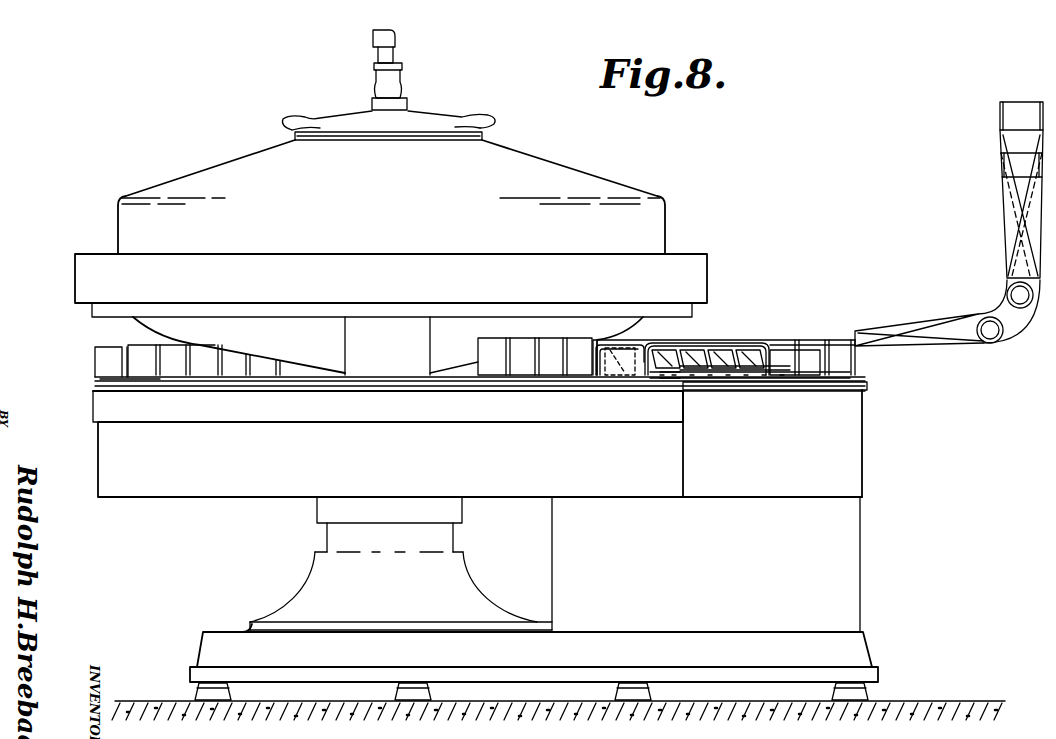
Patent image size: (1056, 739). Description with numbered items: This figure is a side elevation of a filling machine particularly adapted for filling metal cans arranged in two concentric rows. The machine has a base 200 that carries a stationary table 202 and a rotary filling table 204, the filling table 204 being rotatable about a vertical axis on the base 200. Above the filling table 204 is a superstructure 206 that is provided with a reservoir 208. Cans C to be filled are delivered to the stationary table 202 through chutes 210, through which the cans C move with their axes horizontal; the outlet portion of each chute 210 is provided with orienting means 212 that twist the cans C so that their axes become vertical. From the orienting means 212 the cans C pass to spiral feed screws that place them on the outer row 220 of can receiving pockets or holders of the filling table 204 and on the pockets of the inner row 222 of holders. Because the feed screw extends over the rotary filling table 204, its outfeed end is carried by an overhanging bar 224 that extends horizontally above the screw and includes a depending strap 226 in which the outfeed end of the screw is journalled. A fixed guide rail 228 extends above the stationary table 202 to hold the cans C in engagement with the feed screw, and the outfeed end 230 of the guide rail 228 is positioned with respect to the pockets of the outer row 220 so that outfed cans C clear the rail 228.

The base 200 is at (226, 640).
The stationary table 202 is at (838, 467).
The rotary filling table 204 is at (215, 478).
The superstructure 206 is at (687, 262).
The reservoir 208 is at (430, 120).
The chute 210 is at (1003, 165).
The orienting means 212 is at (920, 326).
The outer row of can receiving pockets 220 is at (100, 384).
The inner row of holders 222 is at (150, 378).
The bar 224 is at (716, 340).
The depending strap 226 is at (637, 362).
The fixed guide rail 228 is at (788, 368).
The outfeed end of guide rail 230 is at (670, 378).
The can C is at (108, 362).